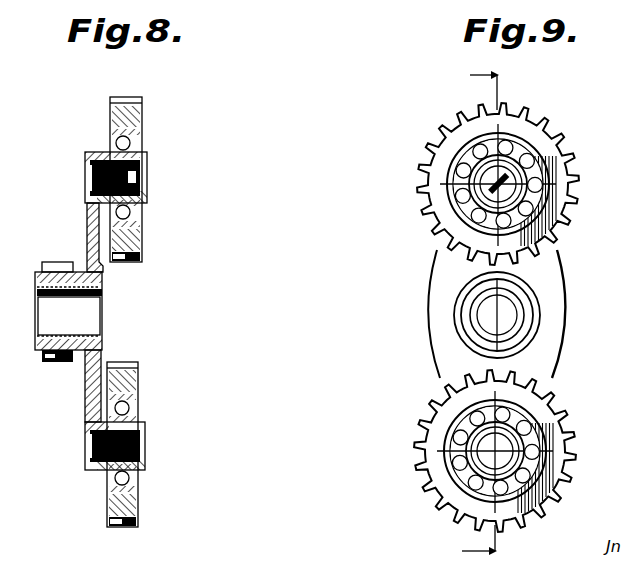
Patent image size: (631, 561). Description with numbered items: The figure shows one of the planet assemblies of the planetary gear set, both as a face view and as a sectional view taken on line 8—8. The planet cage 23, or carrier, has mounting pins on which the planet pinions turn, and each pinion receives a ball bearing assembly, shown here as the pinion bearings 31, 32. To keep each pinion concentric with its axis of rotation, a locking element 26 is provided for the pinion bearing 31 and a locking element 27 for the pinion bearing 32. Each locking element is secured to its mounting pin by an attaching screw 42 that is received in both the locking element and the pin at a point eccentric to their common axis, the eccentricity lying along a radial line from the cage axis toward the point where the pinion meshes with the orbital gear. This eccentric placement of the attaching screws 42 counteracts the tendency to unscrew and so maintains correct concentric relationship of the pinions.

In FIG. 9, the section line 8— 8 is at (472, 314).
In FIG. 8, the planet cage 23 is at (103, 348).
In FIG. 9, the planet cage 23 is at (556, 332).
In FIG. 8, the locking element 26 is at (147, 163).
In FIG. 9, the locking element 26 is at (484, 205).
In FIG. 8, the locking element 27 is at (146, 426).
In FIG. 9, the locking element 27 is at (479, 441).
In FIG. 8, the pinion bearing 31 is at (140, 134).
In FIG. 9, the pinion bearing 31 is at (467, 155).
In FIG. 8, the pinion bearing 32 is at (138, 401).
In FIG. 9, the pinion bearing 32 is at (481, 413).
In FIG. 8, the attaching screw 42 is at (147, 184).
In FIG. 9, the attaching screw 42 is at (493, 181).